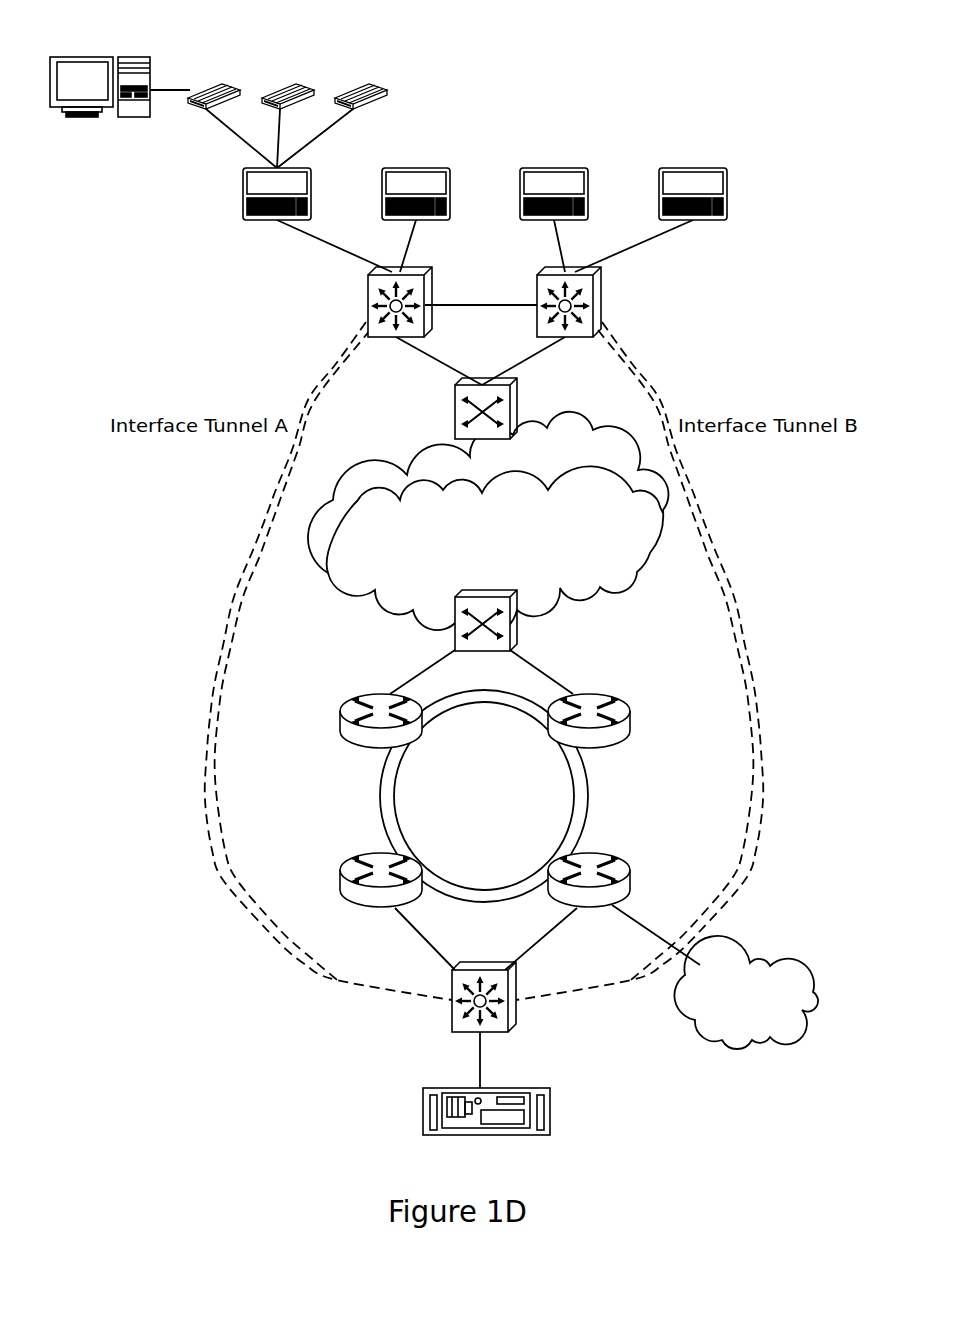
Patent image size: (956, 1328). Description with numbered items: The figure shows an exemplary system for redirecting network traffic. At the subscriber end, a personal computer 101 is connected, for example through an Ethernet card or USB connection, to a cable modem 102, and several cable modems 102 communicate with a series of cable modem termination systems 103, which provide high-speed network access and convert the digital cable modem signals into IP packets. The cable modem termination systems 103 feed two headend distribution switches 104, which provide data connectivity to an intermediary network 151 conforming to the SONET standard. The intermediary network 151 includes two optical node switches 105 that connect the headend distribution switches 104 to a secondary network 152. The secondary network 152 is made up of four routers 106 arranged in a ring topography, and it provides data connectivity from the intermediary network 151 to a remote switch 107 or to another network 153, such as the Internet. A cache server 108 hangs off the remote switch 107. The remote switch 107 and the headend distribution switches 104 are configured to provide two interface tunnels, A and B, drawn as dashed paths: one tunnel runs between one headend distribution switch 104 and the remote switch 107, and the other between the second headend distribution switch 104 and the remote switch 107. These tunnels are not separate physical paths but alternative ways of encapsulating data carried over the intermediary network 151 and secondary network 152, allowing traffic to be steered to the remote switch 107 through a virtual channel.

The personal computer 101 is at (100, 57).
The cable modem 102 is at (376, 81).
The cable modem termination system 103 is at (726, 177).
The headend distribution switch 104 is at (600, 292).
The optical node switch 105 is at (517, 626).
The router 106 is at (614, 855).
The remote switch 107 is at (470, 963).
The cache server 108 is at (540, 1087).
The intermediary network 151 is at (500, 551).
The secondary network 152 is at (499, 806).
The another network 153 is at (750, 1003).